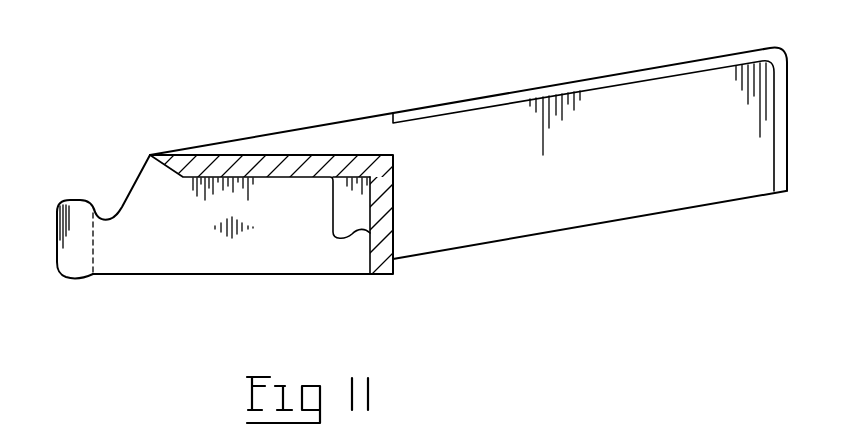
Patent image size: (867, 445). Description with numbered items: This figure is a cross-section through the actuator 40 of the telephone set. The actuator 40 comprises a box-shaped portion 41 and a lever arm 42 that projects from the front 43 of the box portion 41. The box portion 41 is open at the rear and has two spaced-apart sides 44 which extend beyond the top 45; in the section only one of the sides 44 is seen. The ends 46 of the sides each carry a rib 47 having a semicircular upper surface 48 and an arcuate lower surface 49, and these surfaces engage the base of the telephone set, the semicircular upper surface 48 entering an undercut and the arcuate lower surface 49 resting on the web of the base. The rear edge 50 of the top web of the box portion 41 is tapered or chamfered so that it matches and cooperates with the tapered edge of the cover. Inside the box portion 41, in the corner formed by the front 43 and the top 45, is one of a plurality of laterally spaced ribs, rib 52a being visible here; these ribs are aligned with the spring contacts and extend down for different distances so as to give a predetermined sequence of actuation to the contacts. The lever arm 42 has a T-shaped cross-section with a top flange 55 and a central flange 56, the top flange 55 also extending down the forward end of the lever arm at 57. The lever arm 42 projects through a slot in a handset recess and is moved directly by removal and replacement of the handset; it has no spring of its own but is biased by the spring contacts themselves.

The actuator 40 is at (412, 278).
The box-shaped portion 41 is at (355, 154).
The lever arm 42 is at (498, 115).
The front 43 is at (387, 266).
The sides 44 is at (257, 262).
The top 45 is at (277, 156).
The ends 46 is at (143, 264).
The rib 47 is at (62, 248).
The semicircular upper surface 48 is at (73, 200).
The arcuate lower surface 49 is at (73, 278).
The rear edge 50 is at (152, 168).
The rib 52a is at (331, 213).
The top flange 55 is at (625, 75).
The central flange 56 is at (583, 222).
The forward end portion of top flange 57 is at (773, 163).